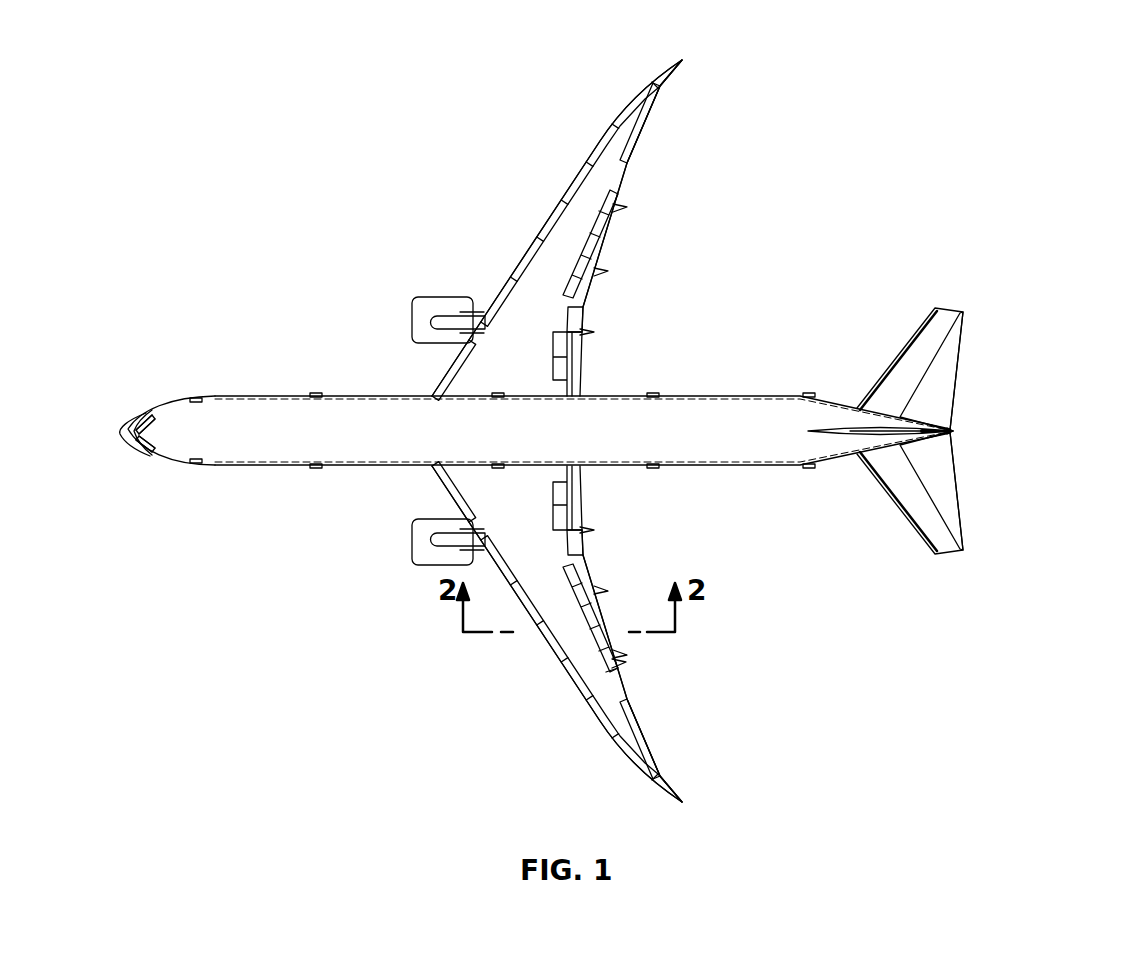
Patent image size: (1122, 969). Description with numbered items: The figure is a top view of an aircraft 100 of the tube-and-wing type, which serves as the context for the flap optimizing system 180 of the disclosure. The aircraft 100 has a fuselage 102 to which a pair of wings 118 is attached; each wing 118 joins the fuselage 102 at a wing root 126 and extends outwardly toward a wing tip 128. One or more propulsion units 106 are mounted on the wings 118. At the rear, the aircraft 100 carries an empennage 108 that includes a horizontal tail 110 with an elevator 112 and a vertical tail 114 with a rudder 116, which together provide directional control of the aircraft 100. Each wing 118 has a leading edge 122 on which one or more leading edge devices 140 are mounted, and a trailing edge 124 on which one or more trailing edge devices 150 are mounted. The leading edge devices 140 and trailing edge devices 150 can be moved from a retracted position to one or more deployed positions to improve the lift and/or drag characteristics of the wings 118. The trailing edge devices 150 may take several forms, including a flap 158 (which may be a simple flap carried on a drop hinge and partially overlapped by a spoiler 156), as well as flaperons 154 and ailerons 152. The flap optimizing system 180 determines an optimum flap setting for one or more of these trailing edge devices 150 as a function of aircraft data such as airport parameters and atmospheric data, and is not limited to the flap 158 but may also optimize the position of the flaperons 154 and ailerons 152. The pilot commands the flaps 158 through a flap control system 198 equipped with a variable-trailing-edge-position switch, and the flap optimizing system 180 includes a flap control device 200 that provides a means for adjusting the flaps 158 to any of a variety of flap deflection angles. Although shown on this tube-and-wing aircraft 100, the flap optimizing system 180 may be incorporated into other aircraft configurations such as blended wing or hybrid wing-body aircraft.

The aircraft 100 is at (196, 158).
The fuselage 102 is at (262, 395).
The propulsion unit 106 is at (412, 330).
The empennage 108 is at (163, 400).
The horizontal tail 110 is at (938, 305).
The elevator 112 is at (960, 335).
The vertical tail 114 is at (952, 425).
The rudder 116 is at (845, 428).
The wing 118 is at (665, 75).
The leading edge 122 is at (650, 75).
The trailing edge 124 is at (670, 78).
The wing root 126 is at (572, 388).
The wing tip 128 is at (683, 58).
The leading edge device 140 is at (507, 283).
The trailing edge device 150 is at (598, 248).
The aileron 152 is at (645, 130).
The flaperon 154 is at (583, 310).
The spoiler 156 is at (625, 663).
The flap 158 is at (575, 490).
The flap optimizing system 180 is at (152, 452).
The flap control system 198 is at (128, 438).
The flap control device 200 is at (160, 405).